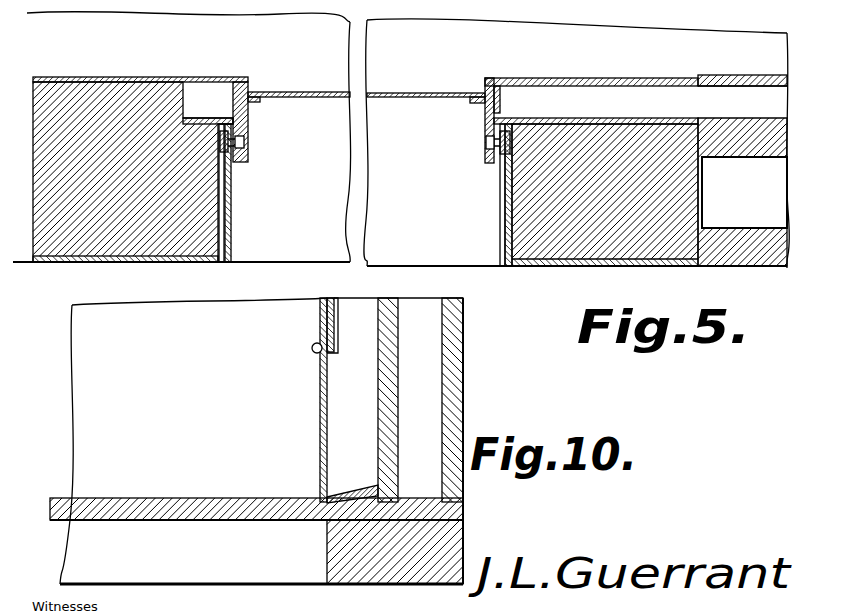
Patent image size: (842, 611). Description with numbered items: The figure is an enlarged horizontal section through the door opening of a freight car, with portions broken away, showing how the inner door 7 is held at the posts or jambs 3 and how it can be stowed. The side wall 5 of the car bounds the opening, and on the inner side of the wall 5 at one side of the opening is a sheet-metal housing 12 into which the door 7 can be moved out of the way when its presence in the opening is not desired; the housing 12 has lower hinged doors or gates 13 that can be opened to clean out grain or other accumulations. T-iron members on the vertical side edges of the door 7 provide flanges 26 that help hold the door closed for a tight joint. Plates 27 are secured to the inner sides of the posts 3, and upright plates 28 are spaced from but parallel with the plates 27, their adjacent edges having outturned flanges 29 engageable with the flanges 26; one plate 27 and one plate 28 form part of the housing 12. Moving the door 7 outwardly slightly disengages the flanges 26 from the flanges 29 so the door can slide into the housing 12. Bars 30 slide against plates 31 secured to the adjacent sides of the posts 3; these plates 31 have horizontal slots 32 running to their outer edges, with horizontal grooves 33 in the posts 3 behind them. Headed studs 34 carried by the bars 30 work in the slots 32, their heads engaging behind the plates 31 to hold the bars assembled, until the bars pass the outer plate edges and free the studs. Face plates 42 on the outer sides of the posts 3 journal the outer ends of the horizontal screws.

In FIG. 5, the posts or jambs 3 is at (78, 238).
In FIG. 10, the side wall 5 is at (456, 394).
In FIG. 5, the door 7 is at (401, 93).
In FIG. 5, the housing 12 is at (716, 78).
In FIG. 10, the housing 12 is at (330, 308).
In FIG. 10, the hinged doors or gates 13 is at (322, 422).
In FIG. 5, the flanges 26 is at (233, 97).
In FIG. 5, the plates 27 is at (194, 112).
In FIG. 5, the upright plates 28 is at (127, 77).
In FIG. 5, the outturned flanges 29 is at (248, 84).
In FIG. 5, the bars 30 is at (246, 126).
In FIG. 5, the plates 31 is at (234, 263).
In FIG. 5, the horizontal slots 32 is at (235, 226).
In FIG. 5, the horizontal grooves 33 is at (226, 212).
In FIG. 5, the headed studs 34 is at (487, 145).
In FIG. 5, the face plates 42 is at (160, 265).